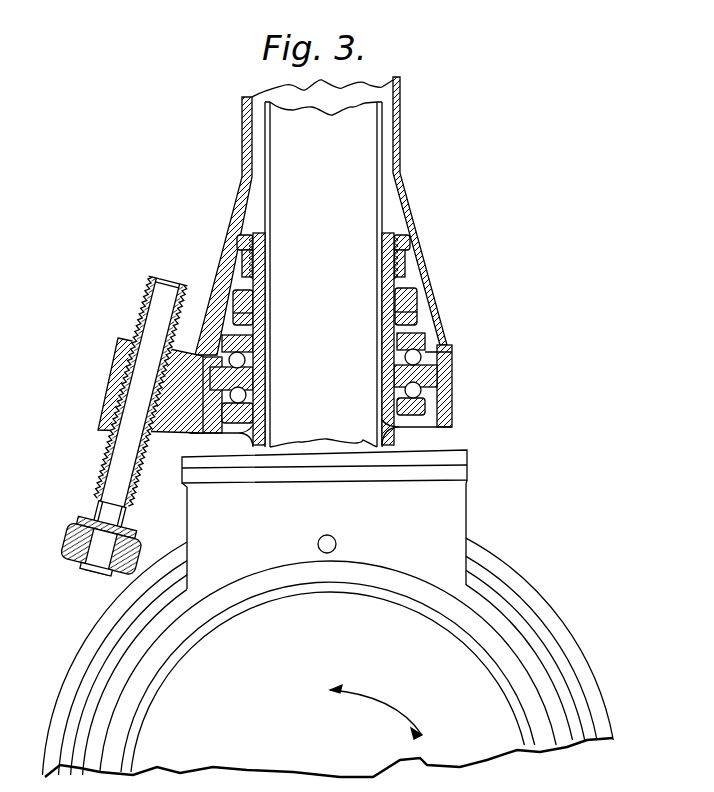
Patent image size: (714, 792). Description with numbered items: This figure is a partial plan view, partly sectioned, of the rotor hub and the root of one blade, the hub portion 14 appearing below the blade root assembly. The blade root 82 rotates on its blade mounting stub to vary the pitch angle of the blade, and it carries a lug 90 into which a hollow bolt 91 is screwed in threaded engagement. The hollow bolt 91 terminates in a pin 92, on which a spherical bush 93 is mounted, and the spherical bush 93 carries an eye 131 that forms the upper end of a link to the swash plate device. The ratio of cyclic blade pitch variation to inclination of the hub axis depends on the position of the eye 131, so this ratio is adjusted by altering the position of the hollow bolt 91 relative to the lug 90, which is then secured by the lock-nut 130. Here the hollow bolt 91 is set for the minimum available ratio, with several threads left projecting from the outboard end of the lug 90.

The crankcase body 14 is at (438, 503).
The blade root 82 is at (440, 357).
The lug 90 is at (178, 400).
The lock-nut 130 is at (100, 420).
The hollow bolt 91 is at (97, 503).
The eye 131 is at (63, 540).
The spherical bush 93 is at (80, 553).
The pin 92 is at (107, 550).